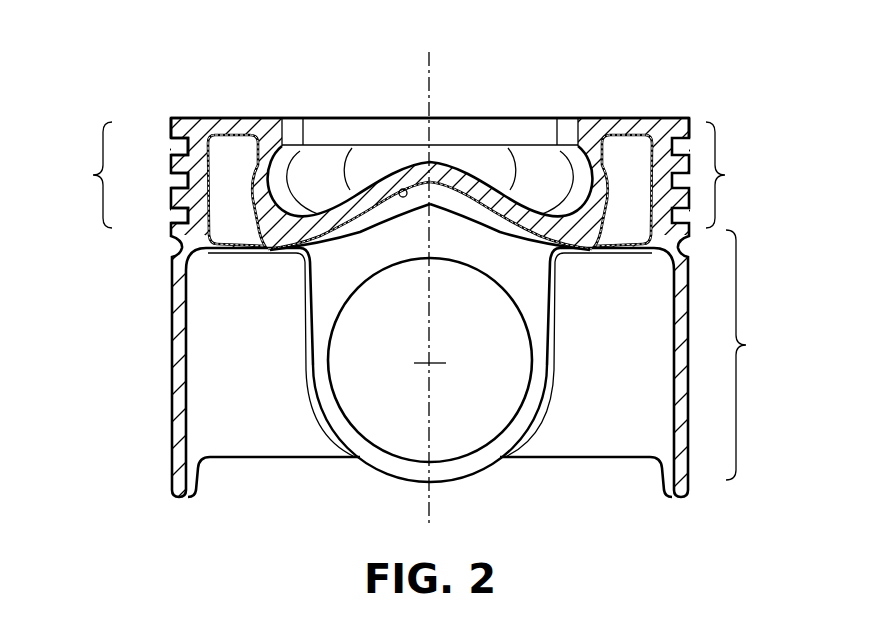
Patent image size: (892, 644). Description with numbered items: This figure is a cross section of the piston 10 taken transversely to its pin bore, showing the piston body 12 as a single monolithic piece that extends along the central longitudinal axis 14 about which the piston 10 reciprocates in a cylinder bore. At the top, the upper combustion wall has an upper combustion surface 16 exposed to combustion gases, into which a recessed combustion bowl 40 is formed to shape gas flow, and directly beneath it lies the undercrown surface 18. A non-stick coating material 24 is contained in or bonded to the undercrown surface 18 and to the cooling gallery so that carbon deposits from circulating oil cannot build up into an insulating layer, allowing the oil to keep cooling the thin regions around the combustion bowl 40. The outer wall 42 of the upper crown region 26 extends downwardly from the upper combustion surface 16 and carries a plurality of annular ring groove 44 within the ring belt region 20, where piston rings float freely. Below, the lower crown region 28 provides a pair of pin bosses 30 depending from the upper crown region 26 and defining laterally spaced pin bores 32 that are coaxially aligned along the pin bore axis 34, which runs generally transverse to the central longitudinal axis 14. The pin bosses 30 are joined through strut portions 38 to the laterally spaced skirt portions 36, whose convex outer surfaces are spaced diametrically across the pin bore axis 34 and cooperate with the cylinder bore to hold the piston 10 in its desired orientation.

The piston 10 is at (730, 106).
The piston body 12 is at (668, 128).
The central longitudinal axis 14 is at (432, 68).
The upper combustion surface 16 is at (508, 172).
The undercrown surface 18 is at (403, 189).
The ring belt region 20 is at (83, 175).
The non-stick coating material 24 is at (468, 210).
The upper crown region 26 is at (731, 175).
The lower crown region 28 is at (752, 355).
The pin bosses 30 is at (486, 460).
The pin bores 32 is at (353, 420).
The pin bore axis 34 is at (432, 358).
The skirt portions 36 is at (171, 418).
The strut portions 38 is at (240, 433).
The combustion bowl 40 is at (366, 176).
The outer wall 42 is at (171, 130).
The annular ring groove 44 is at (187, 208).